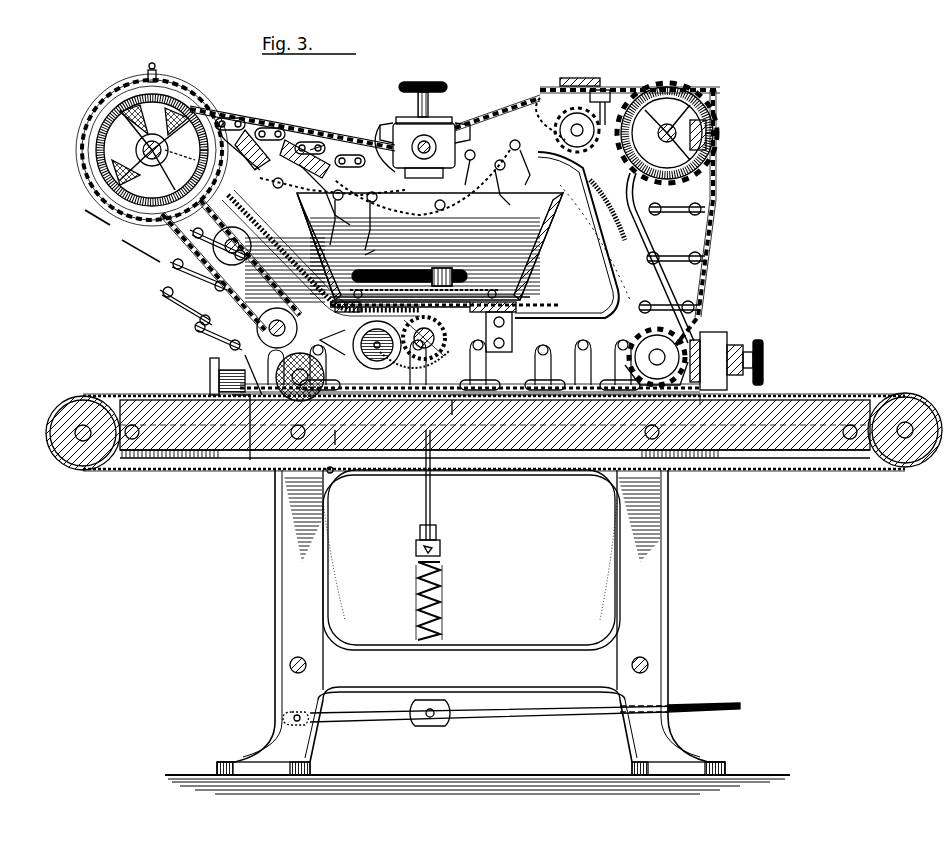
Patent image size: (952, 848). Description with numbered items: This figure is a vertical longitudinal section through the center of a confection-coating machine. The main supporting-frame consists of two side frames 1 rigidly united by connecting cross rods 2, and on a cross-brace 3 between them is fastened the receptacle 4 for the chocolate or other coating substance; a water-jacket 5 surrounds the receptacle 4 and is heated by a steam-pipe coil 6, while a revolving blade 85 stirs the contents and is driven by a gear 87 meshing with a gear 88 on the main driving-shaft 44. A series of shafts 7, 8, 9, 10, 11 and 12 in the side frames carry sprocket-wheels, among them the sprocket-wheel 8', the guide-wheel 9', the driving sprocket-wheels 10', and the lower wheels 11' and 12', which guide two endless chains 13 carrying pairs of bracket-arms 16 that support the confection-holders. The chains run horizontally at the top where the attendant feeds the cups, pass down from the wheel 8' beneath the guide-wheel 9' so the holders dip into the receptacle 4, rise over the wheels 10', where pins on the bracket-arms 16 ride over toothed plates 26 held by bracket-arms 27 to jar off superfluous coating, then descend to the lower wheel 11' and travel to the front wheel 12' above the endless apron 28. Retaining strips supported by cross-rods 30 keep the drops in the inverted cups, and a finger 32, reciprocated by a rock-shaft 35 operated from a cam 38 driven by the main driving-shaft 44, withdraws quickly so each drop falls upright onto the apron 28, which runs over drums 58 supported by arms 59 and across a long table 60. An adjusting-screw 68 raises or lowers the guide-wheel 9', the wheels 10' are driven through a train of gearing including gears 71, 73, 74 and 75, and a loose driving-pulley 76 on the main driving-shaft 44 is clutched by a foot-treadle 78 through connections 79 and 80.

The side frame 1 is at (477, 473).
The connecting cross rod 2 is at (330, 470).
The cross-brace 3 is at (515, 330).
The receptacle 4 is at (430, 246).
The water-jacket 5 is at (540, 268).
The steam-pipe coil 6 is at (475, 290).
The shaft 7 is at (690, 115).
The shaft 8 is at (587, 95).
The sprocket-wheel 8' is at (467, 124).
The shaft 9 is at (438, 133).
The guide-wheel 9' is at (382, 135).
The shaft 10 is at (152, 150).
The sprocket-wheel 10' is at (138, 150).
The shaft 11 is at (230, 448).
The sprocket-wheel 11' is at (215, 372).
The shaft 12 is at (747, 355).
The sprocket-wheel 12' is at (693, 279).
The endless chain 13 is at (715, 232).
The bracket-arm 16 is at (690, 212).
The toothed plate 26 is at (262, 150).
The bracket-arm 27 is at (302, 170).
The endless apron 28 is at (140, 388).
The cross-rod 30 is at (156, 70).
The finger 32 is at (400, 410).
The rock-shaft 35 is at (330, 445).
The cam 38 is at (360, 345).
The main driving-shaft 44 is at (425, 342).
The drum 58 is at (82, 398).
The arm 59 is at (210, 445).
The table 60 is at (522, 428).
The adjusting-screw 68 is at (432, 115).
The gear 71 is at (700, 135).
The gear 73 is at (205, 330).
The gear 74 is at (170, 296).
The gear 75 is at (122, 240).
The driving-pulley 76 is at (478, 364).
The foot-treadle 78 is at (512, 718).
The connection 79 is at (438, 600).
The connection 80 is at (428, 518).
The revolving blade 85 is at (444, 283).
The gear 87 is at (528, 308).
The gear 88 is at (455, 415).